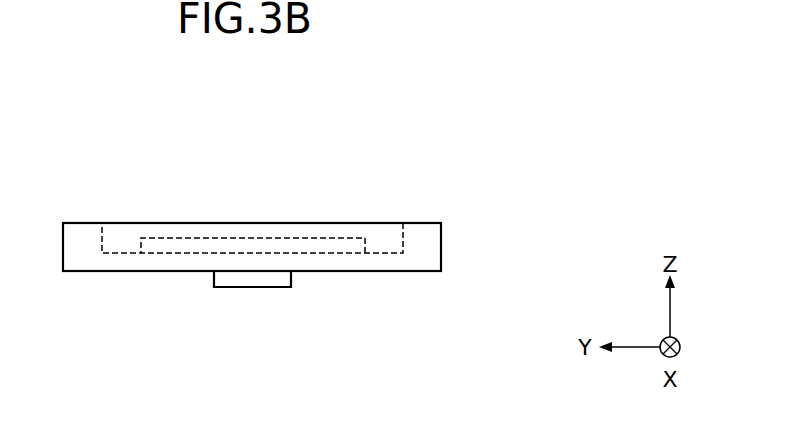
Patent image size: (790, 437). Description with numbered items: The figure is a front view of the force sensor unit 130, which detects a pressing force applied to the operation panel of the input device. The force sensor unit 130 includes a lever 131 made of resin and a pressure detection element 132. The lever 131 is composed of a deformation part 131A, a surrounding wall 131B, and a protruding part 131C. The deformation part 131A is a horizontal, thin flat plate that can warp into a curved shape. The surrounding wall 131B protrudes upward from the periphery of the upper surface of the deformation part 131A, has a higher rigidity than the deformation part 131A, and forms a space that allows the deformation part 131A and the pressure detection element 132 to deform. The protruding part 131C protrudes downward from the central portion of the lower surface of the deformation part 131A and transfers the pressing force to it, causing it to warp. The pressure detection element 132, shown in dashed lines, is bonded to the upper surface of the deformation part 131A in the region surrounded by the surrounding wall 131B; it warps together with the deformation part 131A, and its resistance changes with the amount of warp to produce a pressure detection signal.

The force sensor unit 130 is at (275, 282).
The lever 131 is at (294, 314).
The deformation part 131A is at (347, 260).
The surrounding wall 131B is at (432, 239).
The protruding part 131C is at (252, 314).
The pressure detection element 132 is at (254, 245).